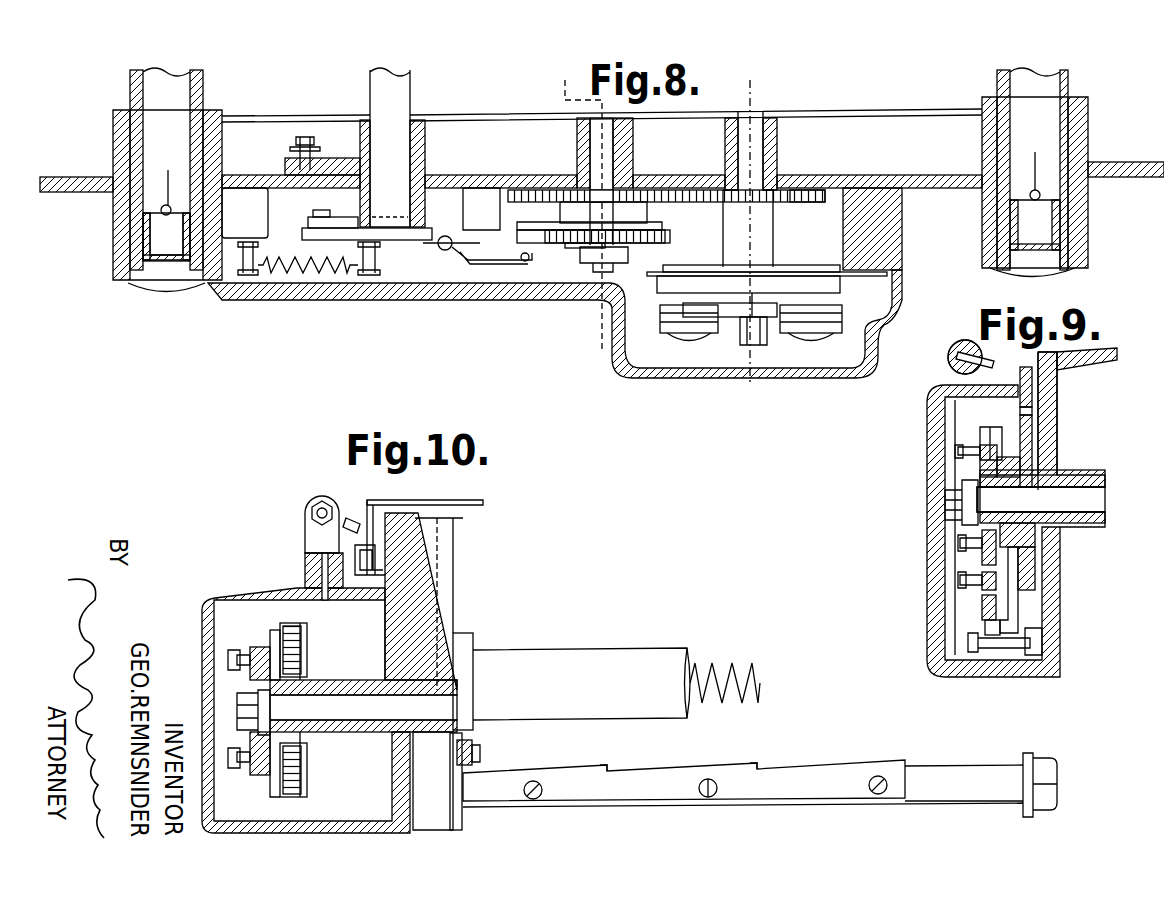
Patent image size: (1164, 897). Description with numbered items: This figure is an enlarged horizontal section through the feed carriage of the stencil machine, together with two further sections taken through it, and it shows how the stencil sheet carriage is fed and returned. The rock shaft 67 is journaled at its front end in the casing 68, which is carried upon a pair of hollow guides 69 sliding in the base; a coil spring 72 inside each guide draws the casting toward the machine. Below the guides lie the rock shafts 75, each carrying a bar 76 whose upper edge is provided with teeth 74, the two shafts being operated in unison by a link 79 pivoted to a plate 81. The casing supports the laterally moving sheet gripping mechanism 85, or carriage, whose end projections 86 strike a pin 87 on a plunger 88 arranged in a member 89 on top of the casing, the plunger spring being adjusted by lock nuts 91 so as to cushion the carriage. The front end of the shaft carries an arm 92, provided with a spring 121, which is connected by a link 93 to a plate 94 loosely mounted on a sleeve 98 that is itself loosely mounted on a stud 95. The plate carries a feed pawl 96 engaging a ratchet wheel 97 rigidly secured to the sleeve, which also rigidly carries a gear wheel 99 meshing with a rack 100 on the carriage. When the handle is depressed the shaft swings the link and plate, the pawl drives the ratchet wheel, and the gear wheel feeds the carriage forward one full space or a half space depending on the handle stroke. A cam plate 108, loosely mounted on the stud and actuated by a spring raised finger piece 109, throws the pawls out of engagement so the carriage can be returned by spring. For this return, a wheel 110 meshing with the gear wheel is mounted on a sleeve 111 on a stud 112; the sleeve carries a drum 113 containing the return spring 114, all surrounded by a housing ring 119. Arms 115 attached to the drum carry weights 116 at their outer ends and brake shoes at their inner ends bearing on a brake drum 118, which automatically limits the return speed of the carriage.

In FIG. 8, the shaft 67 is at (392, 100).
In FIG. 8, the casing 68 is at (872, 210).
In FIG. 10, the casing 68 is at (425, 605).
In FIG. 8, the guides 69 is at (150, 95).
In FIG. 10, the guides 69 is at (581, 684).
In FIG. 8, the coil spring 72 is at (168, 170).
In FIG. 10, the coil spring 72 is at (745, 665).
In FIG. 10, the teeth 74 is at (610, 768).
In FIG. 10, the rock shafts 75 is at (981, 785).
In FIG. 10, the bar 76 is at (743, 783).
In FIG. 8, the link 79 is at (878, 108).
In FIG. 10, the link 79 is at (485, 752).
In FIG. 10, the plate 81 is at (462, 790).
In FIG. 10, the sheet gripping mechanism 85 is at (380, 500).
In FIG. 10, the projections 86 is at (360, 515).
In FIG. 9, the pin 87 is at (995, 360).
In FIG. 10, the pin 87 is at (348, 518).
In FIG. 9, the plunger 88 is at (964, 340).
In FIG. 9, the member 89 is at (948, 362).
In FIG. 10, the member 89 is at (322, 538).
In FIG. 10, the lock nuts 91 is at (312, 512).
In FIG. 8, the arm 92 is at (390, 242).
In FIG. 8, the link 93 is at (343, 228).
In FIG. 8, the plate 94 is at (568, 245).
In FIG. 9, the plate 94 is at (982, 592).
In FIG. 8, the stud 95 is at (598, 148).
In FIG. 9, the stud 95 is at (1082, 500).
In FIG. 9, the feed pawl 96 is at (995, 600).
In FIG. 8, the ratchet wheel 97 is at (672, 236).
In FIG. 9, the ratchet wheel 97 is at (980, 467).
In FIG. 8, the sleeve 98 is at (622, 215).
In FIG. 9, the sleeve 98 is at (1010, 522).
In FIG. 8, the gear wheel 99 is at (548, 192).
In FIG. 9, the gear wheel 99 is at (1030, 445).
In FIG. 9, the rack 100 is at (1024, 398).
In FIG. 8, the cam plate 108 is at (498, 262).
In FIG. 9, the cam plate 108 is at (985, 567).
In FIG. 8, the finger piece 109 is at (445, 252).
In FIG. 8, the wheel 110 is at (802, 190).
In FIG. 10, the wheel 110 is at (458, 665).
In FIG. 8, the sleeve 111 is at (762, 230).
In FIG. 10, the sleeve 111 is at (320, 710).
In FIG. 8, the stud 112 is at (758, 133).
In FIG. 10, the stud 112 is at (308, 790).
In FIG. 10, the drum 113 is at (305, 665).
In FIG. 10, the spring 114 is at (296, 640).
In FIG. 8, the arms 115 is at (733, 320).
In FIG. 10, the arms 115 is at (248, 648).
In FIG. 8, the weights 116 is at (690, 335).
In FIG. 10, the weights 116 is at (245, 682).
In FIG. 10, the brake drum 118 is at (240, 697).
In FIG. 8, the housing ring 119 is at (581, 320).
In FIG. 10, the housing ring 119 is at (288, 612).
In FIG. 8, the spring 121 is at (290, 283).